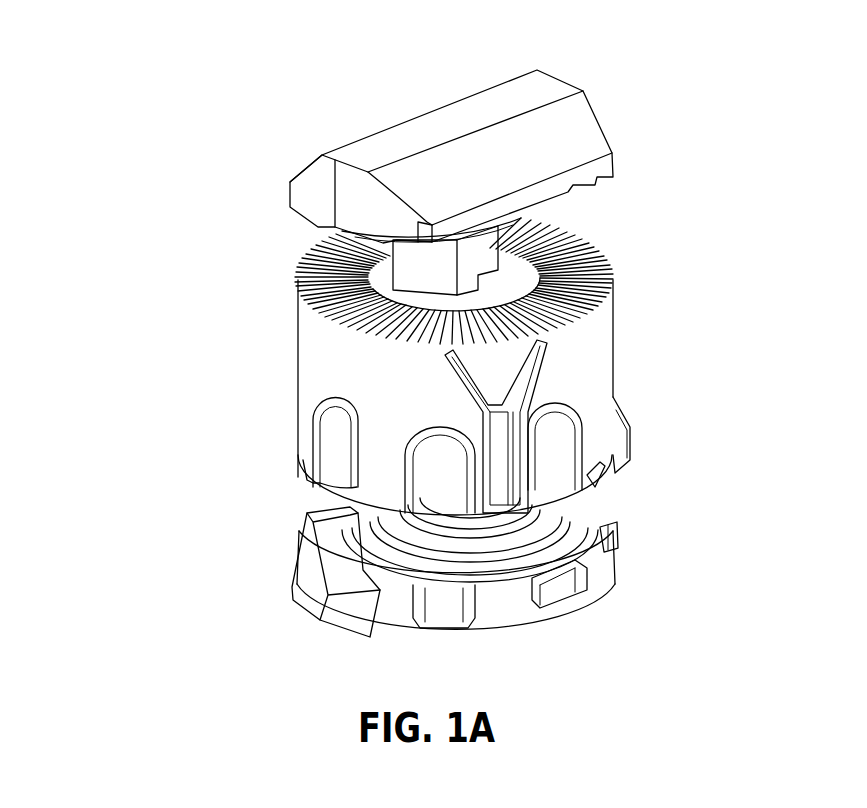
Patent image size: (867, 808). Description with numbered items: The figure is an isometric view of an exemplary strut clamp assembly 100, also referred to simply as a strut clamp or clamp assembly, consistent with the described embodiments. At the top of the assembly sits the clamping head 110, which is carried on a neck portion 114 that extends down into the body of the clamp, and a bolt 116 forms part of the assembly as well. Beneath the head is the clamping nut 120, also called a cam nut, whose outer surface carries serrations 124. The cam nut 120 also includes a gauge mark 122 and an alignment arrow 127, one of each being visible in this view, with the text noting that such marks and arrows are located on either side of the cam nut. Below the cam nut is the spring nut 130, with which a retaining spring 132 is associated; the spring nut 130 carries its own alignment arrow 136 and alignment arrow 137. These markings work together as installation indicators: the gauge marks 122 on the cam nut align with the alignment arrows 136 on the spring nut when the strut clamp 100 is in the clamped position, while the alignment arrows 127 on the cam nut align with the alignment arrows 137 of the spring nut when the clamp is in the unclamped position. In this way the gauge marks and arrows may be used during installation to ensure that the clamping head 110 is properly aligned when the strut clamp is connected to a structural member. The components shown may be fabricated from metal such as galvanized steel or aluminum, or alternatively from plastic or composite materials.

The strut clamp assembly 100 is at (140, 41).
The clamping head 110 is at (573, 125).
The neck portion 114 is at (420, 265).
The bolt 116 is at (607, 290).
The serrations 124 is at (600, 227).
The clamping nut 120 is at (297, 380).
The gauge mark 122 is at (480, 365).
The alignment arrow 127 is at (613, 477).
The spring nut 130 is at (585, 585).
The retaining spring 132 is at (450, 533).
The alignment arrow 136 is at (308, 558).
The alignment arrow 137 is at (612, 550).